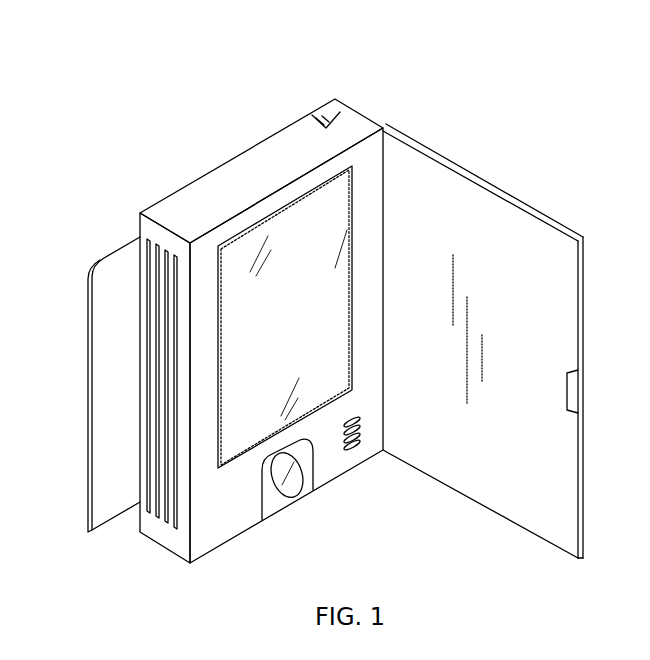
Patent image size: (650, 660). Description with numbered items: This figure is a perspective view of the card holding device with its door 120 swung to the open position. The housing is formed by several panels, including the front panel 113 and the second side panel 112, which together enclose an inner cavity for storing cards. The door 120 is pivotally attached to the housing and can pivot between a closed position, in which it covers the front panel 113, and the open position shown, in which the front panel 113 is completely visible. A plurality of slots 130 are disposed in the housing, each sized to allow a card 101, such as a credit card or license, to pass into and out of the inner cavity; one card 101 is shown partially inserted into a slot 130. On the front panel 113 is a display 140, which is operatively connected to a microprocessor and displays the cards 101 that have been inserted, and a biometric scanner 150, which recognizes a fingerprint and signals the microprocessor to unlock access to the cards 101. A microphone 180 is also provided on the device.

The card 101 is at (105, 257).
The second side panel 112 is at (325, 127).
The front panel 113 is at (300, 178).
The door 120 is at (532, 208).
The slots 130 is at (162, 515).
The display 140 is at (247, 233).
The biometric scanner 150 is at (298, 455).
The microphone 180 is at (353, 448).